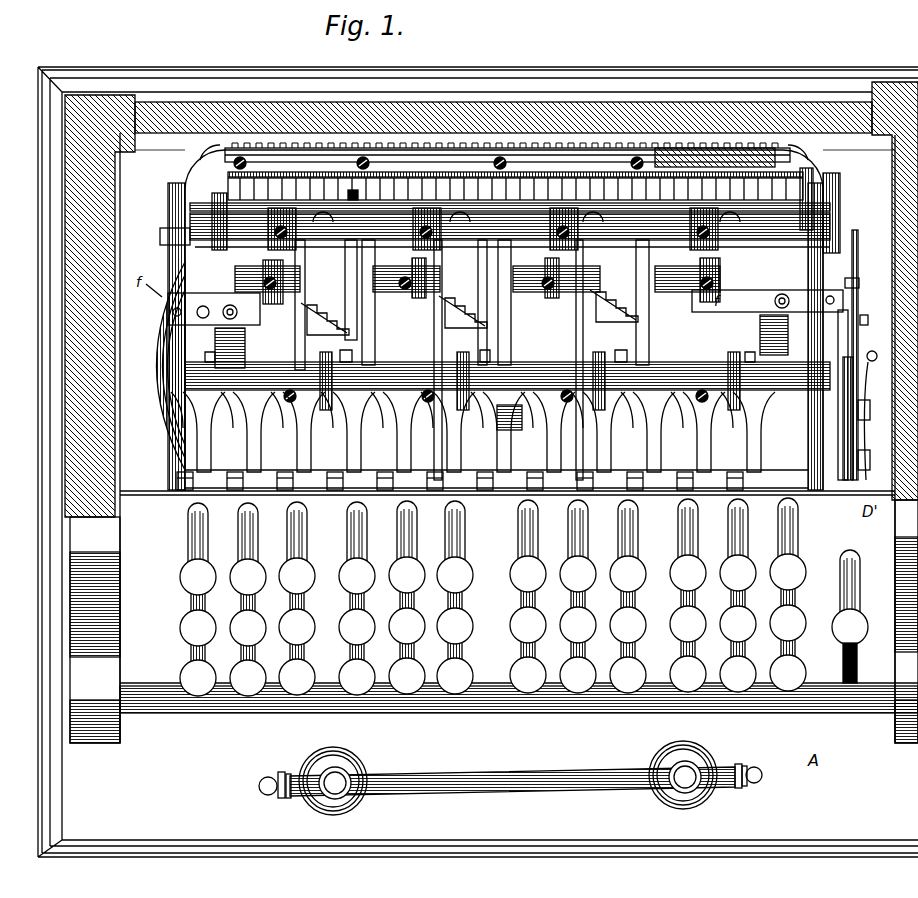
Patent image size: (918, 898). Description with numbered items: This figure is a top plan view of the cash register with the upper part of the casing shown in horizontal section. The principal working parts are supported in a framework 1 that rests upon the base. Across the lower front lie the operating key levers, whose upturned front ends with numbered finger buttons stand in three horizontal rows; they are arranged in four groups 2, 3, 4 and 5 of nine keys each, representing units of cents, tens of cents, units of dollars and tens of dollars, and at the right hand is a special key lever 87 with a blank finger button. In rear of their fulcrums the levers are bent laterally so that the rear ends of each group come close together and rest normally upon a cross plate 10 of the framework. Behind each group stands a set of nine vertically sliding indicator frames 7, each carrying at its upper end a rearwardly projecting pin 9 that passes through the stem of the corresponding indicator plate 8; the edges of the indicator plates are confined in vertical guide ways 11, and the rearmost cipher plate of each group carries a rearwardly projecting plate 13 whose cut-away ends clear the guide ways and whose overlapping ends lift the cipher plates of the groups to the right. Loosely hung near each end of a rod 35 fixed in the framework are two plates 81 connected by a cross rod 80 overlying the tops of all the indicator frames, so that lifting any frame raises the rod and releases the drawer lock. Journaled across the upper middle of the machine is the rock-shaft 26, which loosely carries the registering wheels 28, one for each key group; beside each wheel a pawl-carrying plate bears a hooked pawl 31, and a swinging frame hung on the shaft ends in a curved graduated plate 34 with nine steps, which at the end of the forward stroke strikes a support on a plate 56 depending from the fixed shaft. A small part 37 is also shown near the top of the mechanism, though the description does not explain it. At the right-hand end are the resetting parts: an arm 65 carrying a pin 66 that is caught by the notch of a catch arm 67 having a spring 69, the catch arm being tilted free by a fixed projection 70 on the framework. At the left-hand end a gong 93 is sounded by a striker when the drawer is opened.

The framework 1 is at (170, 210).
The group of key levers 2 is at (278, 690).
The group of key levers 3 is at (440, 690).
The group of key levers 4 is at (605, 690).
The group of key levers 5 is at (766, 690).
The indicator frame 7 is at (256, 188).
The indicator plate 8 is at (740, 150).
The pin 9 is at (520, 140).
The cross plate 10 is at (197, 170).
The vertical guide way 11 is at (228, 160).
The rib plate 13 is at (247, 150).
The rock-shaft 26 is at (262, 272).
The registering wheel 28 is at (376, 334).
The pawl 31 is at (492, 324).
The graduated plate 34 is at (312, 325).
The rod 35 is at (162, 236).
The stop block 37 is at (356, 194).
The plate 56 is at (440, 344).
The arm 65 is at (850, 333).
The pin 66 is at (876, 319).
The catch arm 67 is at (860, 301).
The spring 69 is at (878, 415).
The fixed projection 70 is at (859, 284).
The cross rod 80 is at (652, 203).
The plate 81 is at (212, 215).
The special key lever 87 is at (858, 585).
The gong 93 is at (163, 366).